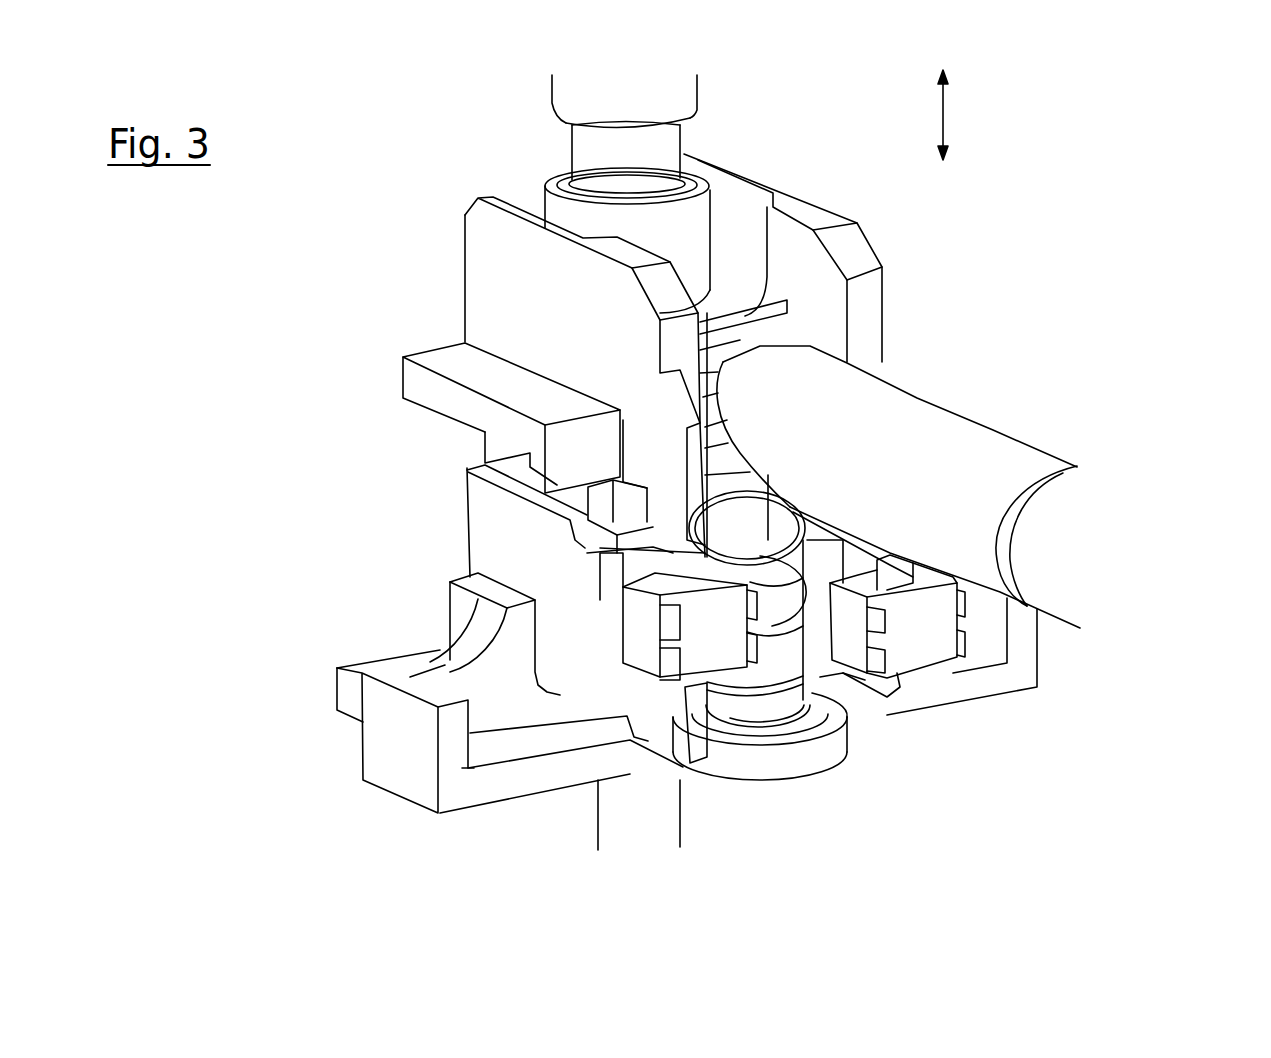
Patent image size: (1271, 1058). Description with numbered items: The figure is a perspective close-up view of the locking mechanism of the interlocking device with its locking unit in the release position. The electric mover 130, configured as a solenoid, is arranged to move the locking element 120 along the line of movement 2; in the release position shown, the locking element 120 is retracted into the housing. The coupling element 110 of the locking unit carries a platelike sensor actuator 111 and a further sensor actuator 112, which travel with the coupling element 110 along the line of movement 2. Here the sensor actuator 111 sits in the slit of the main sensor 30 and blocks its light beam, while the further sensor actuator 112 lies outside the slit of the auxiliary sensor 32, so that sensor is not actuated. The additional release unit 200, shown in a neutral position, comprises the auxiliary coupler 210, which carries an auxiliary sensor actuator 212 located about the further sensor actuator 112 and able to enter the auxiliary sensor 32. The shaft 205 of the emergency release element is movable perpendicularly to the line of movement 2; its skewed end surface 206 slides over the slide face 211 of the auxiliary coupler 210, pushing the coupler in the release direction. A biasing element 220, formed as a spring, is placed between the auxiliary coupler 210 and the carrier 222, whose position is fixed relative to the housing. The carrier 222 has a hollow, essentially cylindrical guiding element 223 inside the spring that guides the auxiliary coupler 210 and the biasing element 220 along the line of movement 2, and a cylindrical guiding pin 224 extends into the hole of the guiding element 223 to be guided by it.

The locking element 120 is at (697, 105).
The line of movement 2 is at (953, 115).
The slide face 211 is at (710, 426).
The additional release unit 200 is at (830, 380).
The auxiliary coupler 210 is at (880, 296).
The shaft 205 is at (1045, 452).
The guiding pin 224 is at (752, 527).
The skewed end surface 206 is at (730, 445).
The biasing element 220 is at (810, 514).
The sensor actuator 111 is at (877, 577).
The coupling element 110 is at (465, 500).
The auxiliary sensor actuator 212 is at (670, 522).
The carrier 222 is at (398, 790).
The further sensor actuator 112 is at (668, 720).
The electric mover 130 is at (680, 830).
The auxiliary sensor 32 is at (713, 653).
The guiding element 223 is at (822, 697).
The main sensor 30 is at (927, 650).